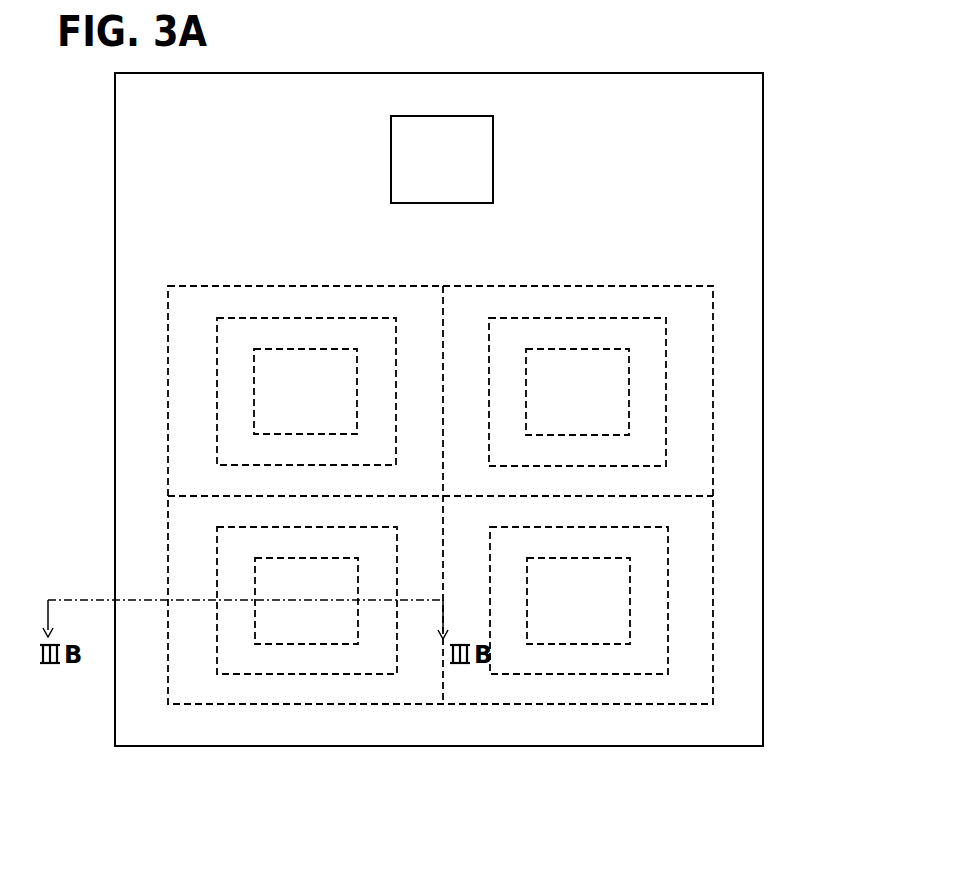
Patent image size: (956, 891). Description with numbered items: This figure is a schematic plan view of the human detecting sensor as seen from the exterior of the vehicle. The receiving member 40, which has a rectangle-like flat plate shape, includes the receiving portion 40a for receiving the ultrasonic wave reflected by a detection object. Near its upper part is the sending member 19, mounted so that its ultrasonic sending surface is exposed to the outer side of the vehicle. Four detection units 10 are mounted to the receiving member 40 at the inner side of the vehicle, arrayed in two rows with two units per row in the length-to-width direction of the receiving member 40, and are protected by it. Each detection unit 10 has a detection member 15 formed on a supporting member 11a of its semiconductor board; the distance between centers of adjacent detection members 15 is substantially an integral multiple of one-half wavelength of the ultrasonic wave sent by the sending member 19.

The detection unit 10 is at (168, 323).
The supporting member 11a is at (187, 368).
The detection member 15 is at (272, 404).
The sending member 19 is at (457, 127).
The receiving member 40 is at (765, 527).
The receiving portion 40a is at (755, 578).